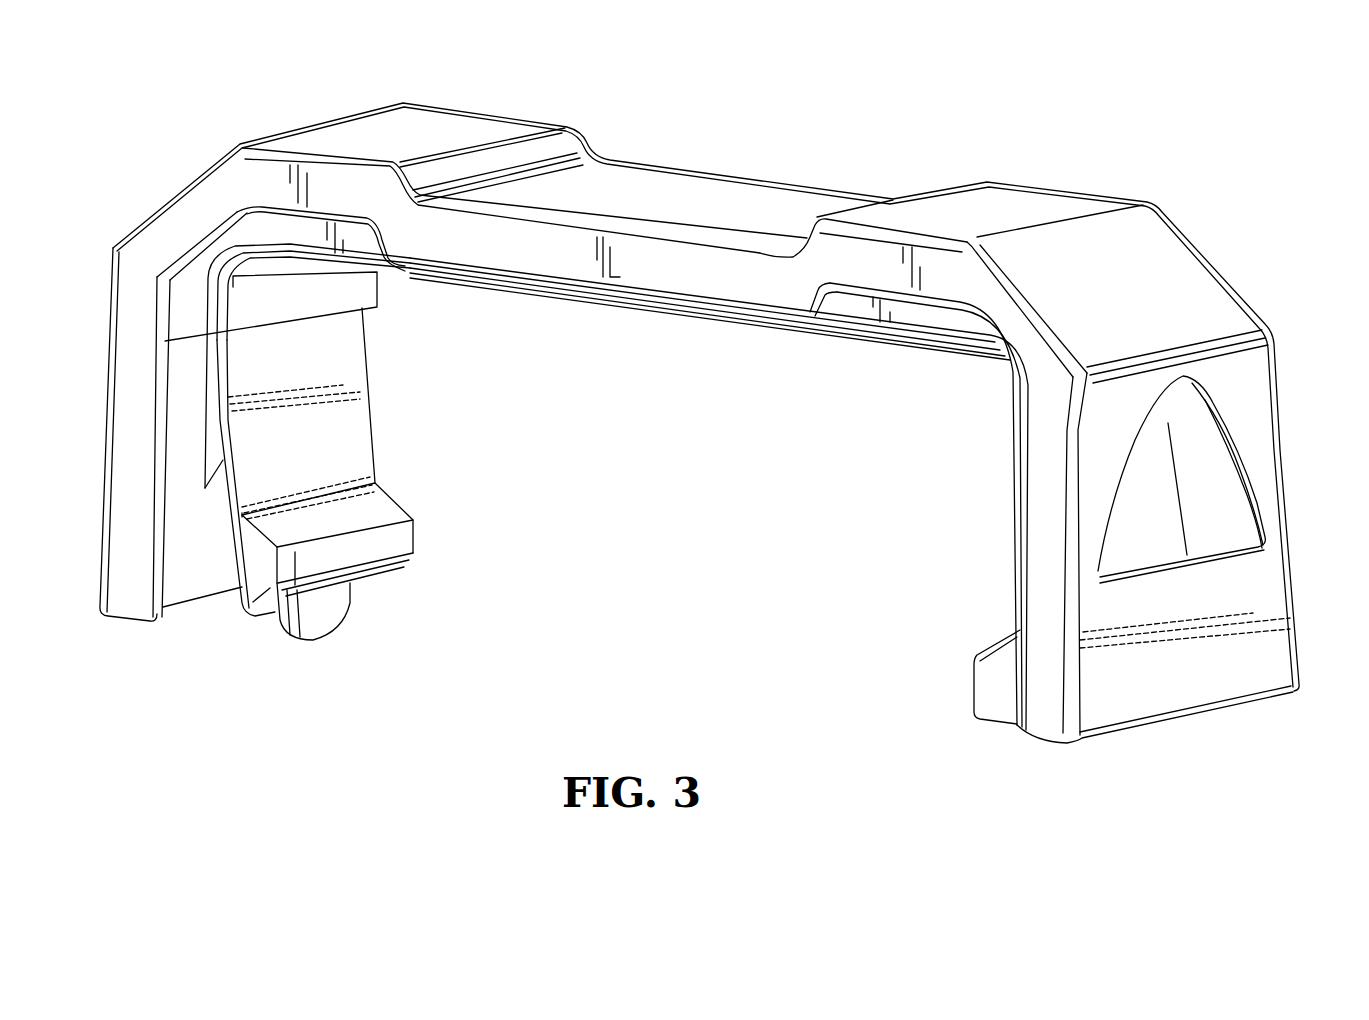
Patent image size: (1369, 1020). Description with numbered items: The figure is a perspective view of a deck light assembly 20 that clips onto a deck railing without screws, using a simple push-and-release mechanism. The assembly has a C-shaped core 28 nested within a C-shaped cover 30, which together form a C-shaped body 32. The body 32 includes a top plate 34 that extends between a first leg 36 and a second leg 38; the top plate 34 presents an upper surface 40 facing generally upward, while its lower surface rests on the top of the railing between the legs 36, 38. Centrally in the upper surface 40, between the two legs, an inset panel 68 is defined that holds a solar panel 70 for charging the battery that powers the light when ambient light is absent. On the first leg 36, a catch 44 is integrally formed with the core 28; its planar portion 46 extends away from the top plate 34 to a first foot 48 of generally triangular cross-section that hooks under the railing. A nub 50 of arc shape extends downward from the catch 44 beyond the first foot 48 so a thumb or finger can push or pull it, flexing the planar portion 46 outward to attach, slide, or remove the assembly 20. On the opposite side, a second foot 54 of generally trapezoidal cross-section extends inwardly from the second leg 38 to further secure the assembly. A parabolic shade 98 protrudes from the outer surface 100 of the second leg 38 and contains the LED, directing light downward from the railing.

The deck light assembly 20 is at (640, 128).
The C-shaped core 28 is at (270, 227).
The C-shaped cover 30 is at (270, 174).
The C-shaped body 32 is at (1155, 200).
The top plate 34 is at (735, 240).
The first leg 36 is at (125, 393).
The second leg 38 is at (1285, 365).
The upper surface 40 is at (380, 128).
The catch 44 is at (380, 419).
The planar portion 46 is at (340, 372).
The first foot 48 is at (410, 540).
The nub 50 is at (330, 605).
The second foot 54 is at (992, 645).
The inset panel 68 is at (698, 188).
The solar panel 70 is at (745, 238).
The shade 98 is at (1232, 500).
The outer surface 100 is at (1265, 587).